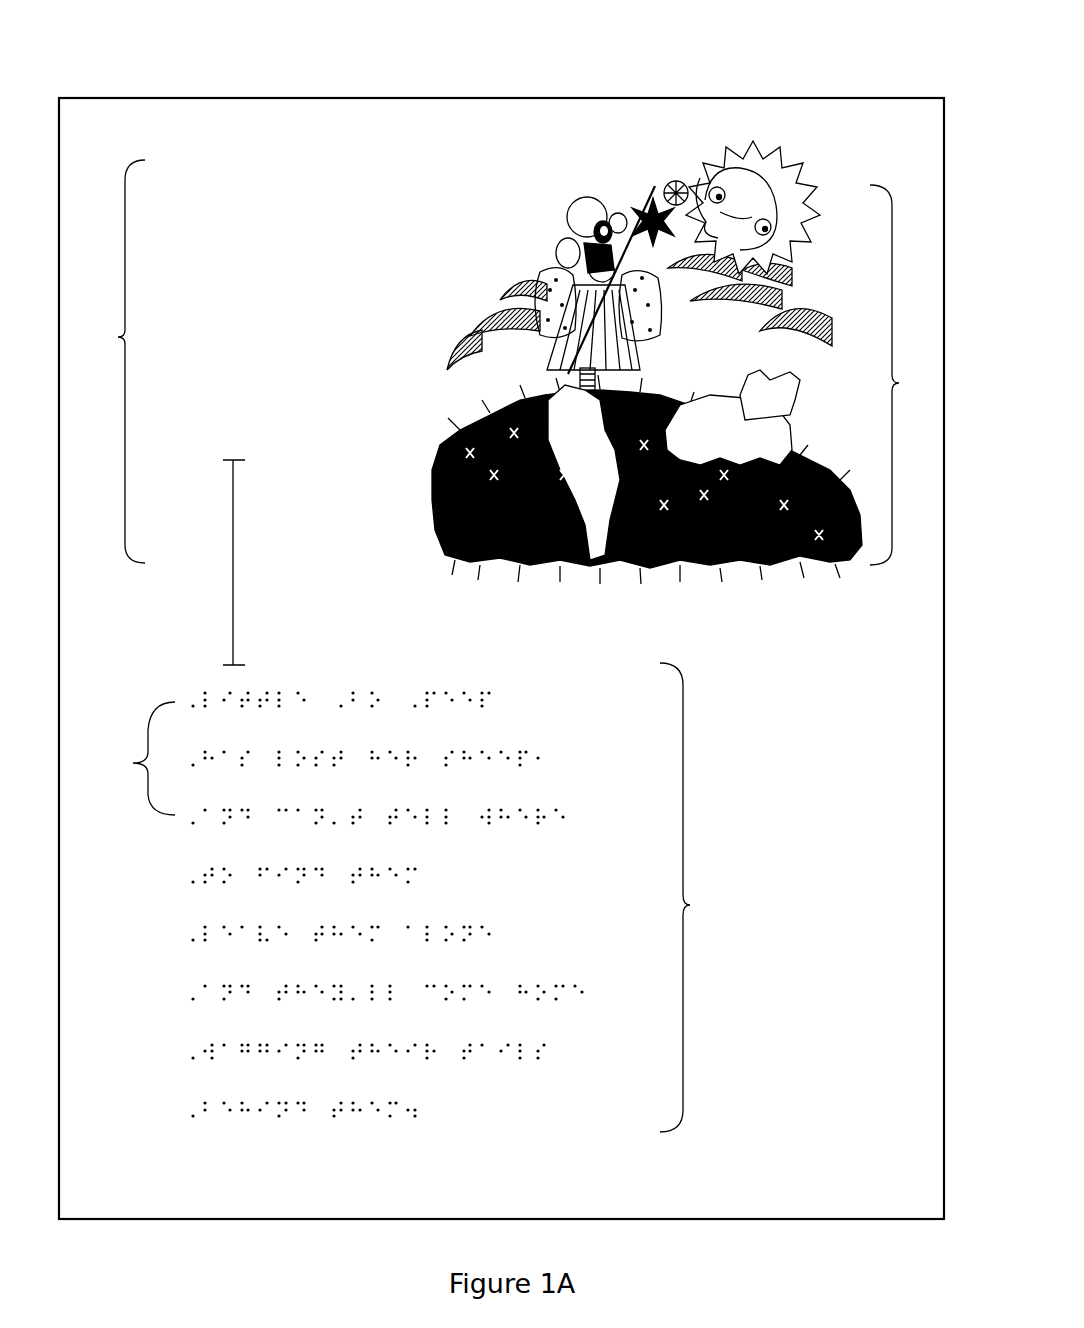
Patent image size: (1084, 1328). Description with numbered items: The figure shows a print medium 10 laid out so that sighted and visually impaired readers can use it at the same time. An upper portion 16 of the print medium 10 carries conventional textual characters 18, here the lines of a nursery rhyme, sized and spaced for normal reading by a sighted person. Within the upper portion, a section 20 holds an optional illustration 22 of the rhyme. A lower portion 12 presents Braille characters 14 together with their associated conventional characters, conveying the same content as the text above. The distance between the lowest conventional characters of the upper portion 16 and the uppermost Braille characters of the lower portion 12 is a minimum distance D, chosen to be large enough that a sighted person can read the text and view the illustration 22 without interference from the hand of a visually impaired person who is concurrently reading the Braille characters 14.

The print medium 10 is at (126, 97).
The lower portion 12 is at (415, 897).
The Braille characters 14 is at (177, 758).
The upper portion 16 is at (258, 361).
The conventional textual characters 18 is at (327, 242).
The section 20 is at (685, 351).
The illustration 22 is at (807, 164).
The minimum distance D is at (240, 562).